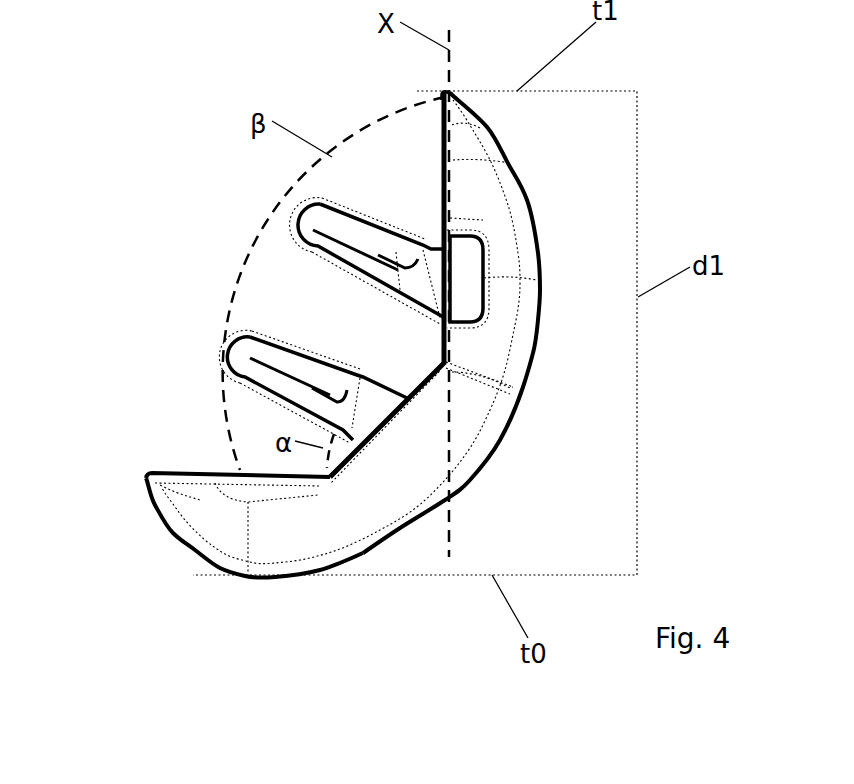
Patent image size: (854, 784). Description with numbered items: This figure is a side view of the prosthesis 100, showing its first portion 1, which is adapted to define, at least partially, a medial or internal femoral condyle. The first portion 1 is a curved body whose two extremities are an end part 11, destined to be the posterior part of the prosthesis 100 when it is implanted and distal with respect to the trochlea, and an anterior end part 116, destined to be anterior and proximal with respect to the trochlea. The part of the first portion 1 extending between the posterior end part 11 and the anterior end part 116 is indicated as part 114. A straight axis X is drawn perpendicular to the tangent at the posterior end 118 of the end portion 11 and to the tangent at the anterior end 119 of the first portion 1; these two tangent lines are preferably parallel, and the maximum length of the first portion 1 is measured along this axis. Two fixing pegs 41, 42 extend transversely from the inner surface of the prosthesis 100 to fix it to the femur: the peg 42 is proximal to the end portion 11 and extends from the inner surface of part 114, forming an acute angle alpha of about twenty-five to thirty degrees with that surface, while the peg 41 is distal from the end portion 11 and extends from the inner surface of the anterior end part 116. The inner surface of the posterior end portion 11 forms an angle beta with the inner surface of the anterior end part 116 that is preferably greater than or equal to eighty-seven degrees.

The prosthesis 100 is at (130, 190).
The first portion 1 is at (533, 205).
The posterior end part 11 is at (187, 523).
The fixing peg 41 is at (367, 233).
The fixing peg 42 is at (327, 377).
The intermediate part of the first portion 114 is at (460, 437).
The anterior end part 116 is at (488, 127).
The posterior end 118 is at (237, 577).
The anterior end 119 is at (451, 92).